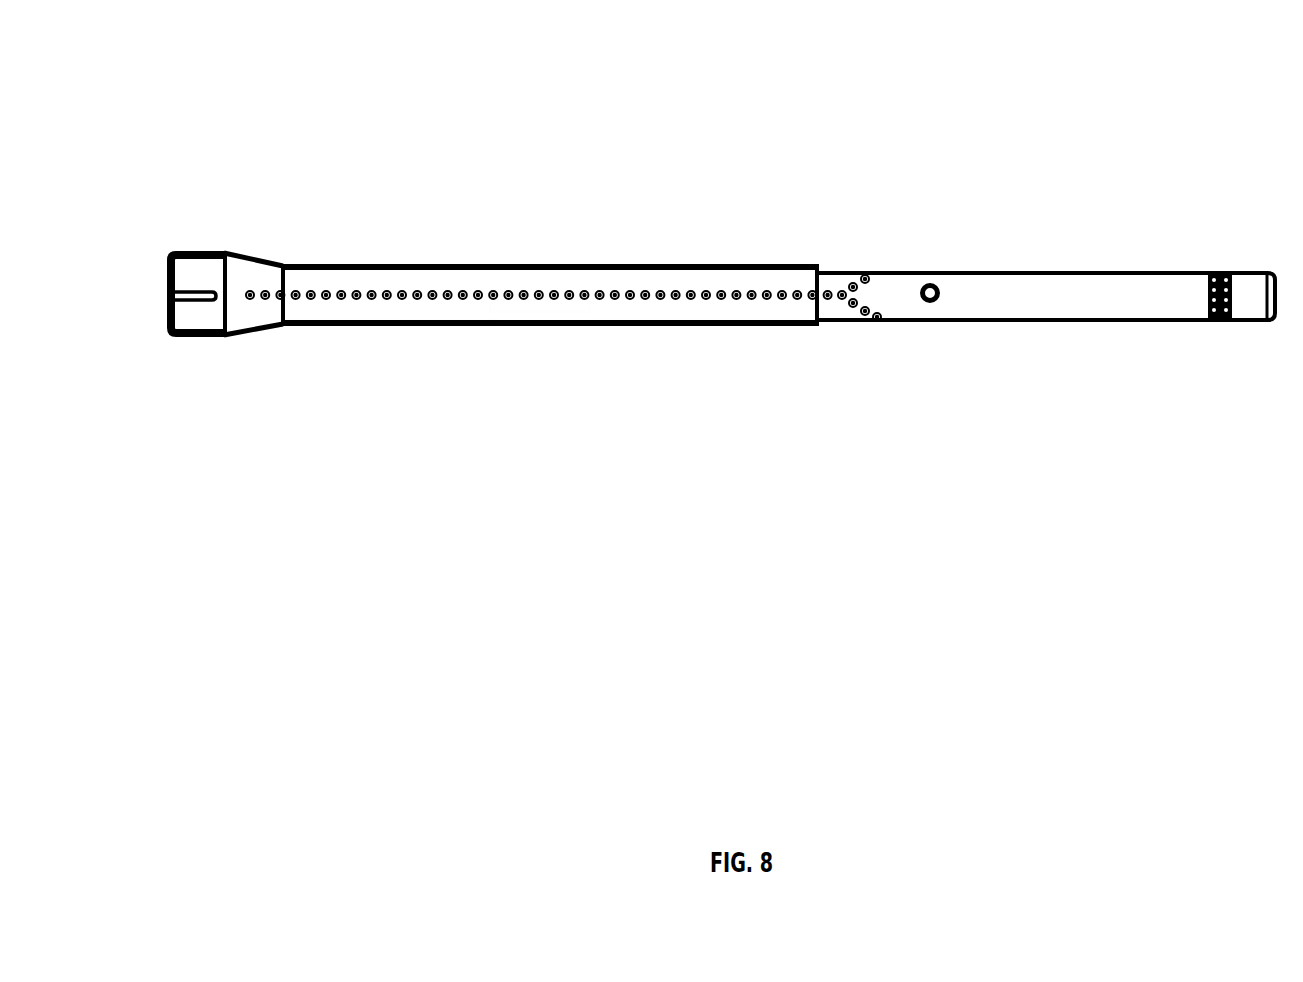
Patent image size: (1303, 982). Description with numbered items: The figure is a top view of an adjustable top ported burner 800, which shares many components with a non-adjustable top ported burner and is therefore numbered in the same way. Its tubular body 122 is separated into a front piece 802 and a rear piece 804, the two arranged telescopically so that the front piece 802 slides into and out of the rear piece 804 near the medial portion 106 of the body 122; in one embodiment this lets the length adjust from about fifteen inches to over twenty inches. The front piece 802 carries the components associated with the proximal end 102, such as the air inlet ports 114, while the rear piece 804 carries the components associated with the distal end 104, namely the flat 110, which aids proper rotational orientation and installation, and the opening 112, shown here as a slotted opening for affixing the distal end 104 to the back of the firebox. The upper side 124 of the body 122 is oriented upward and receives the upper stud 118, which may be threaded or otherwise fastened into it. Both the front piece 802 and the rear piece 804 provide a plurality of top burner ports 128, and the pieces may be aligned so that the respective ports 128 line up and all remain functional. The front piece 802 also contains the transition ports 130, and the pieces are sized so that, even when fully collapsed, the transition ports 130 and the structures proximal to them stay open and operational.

The adjustable top ported burner 800 is at (423, 140).
The distal end 104 is at (208, 240).
The flat 110 is at (210, 320).
The opening 112 is at (203, 298).
The medial portion 106 is at (777, 268).
The rear piece 804 is at (403, 278).
The body 122 is at (448, 337).
The upper side 124 is at (537, 308).
The top burner ports 128 is at (668, 290).
The transition ports 130 is at (860, 277).
The front piece 802 is at (1057, 282).
The upper stud 118 is at (930, 303).
The air inlet ports 114 is at (1230, 277).
The proximal end 102 is at (1250, 325).